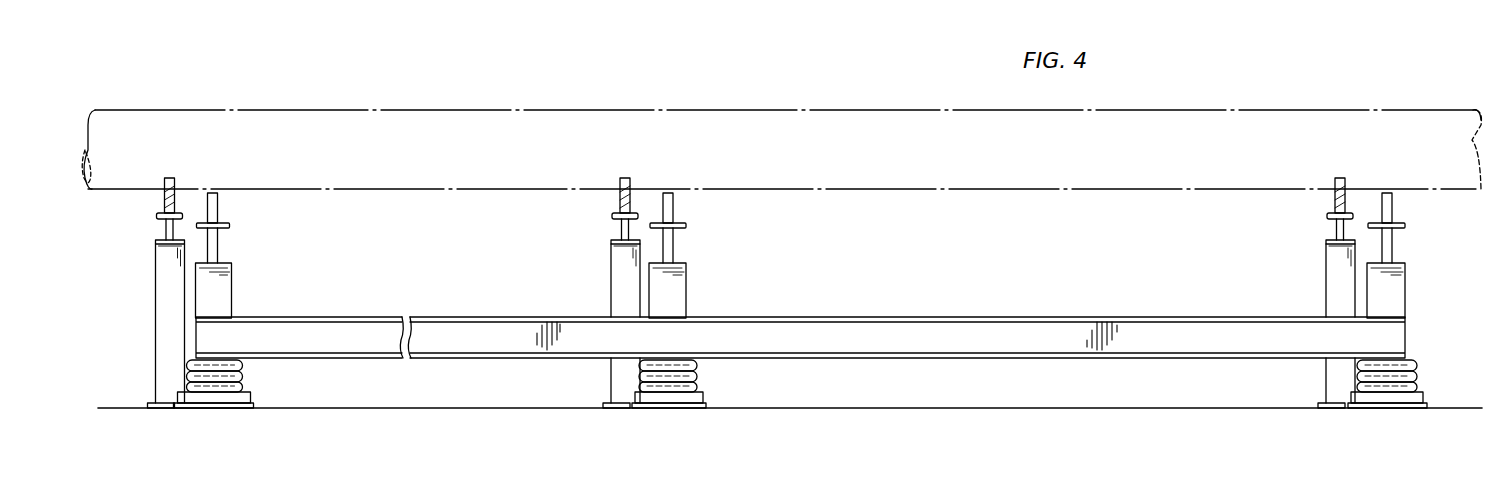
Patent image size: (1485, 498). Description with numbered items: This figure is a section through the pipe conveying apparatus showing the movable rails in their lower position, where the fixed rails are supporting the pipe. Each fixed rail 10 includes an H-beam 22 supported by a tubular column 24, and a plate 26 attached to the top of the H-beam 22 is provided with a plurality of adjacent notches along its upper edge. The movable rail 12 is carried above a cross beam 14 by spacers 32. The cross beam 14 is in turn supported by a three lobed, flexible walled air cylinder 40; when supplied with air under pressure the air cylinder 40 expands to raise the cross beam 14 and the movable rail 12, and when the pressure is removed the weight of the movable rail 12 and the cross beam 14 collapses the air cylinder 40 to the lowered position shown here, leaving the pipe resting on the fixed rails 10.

The fixed rail 10 is at (150, 226).
The movable rail 12 is at (228, 243).
The cross beam 14 is at (439, 319).
The H-beam 22 is at (167, 230).
The tubular column 24 is at (155, 329).
The plate 26 is at (176, 204).
The spacer 32 is at (225, 290).
The air cylinder 40 is at (247, 378).